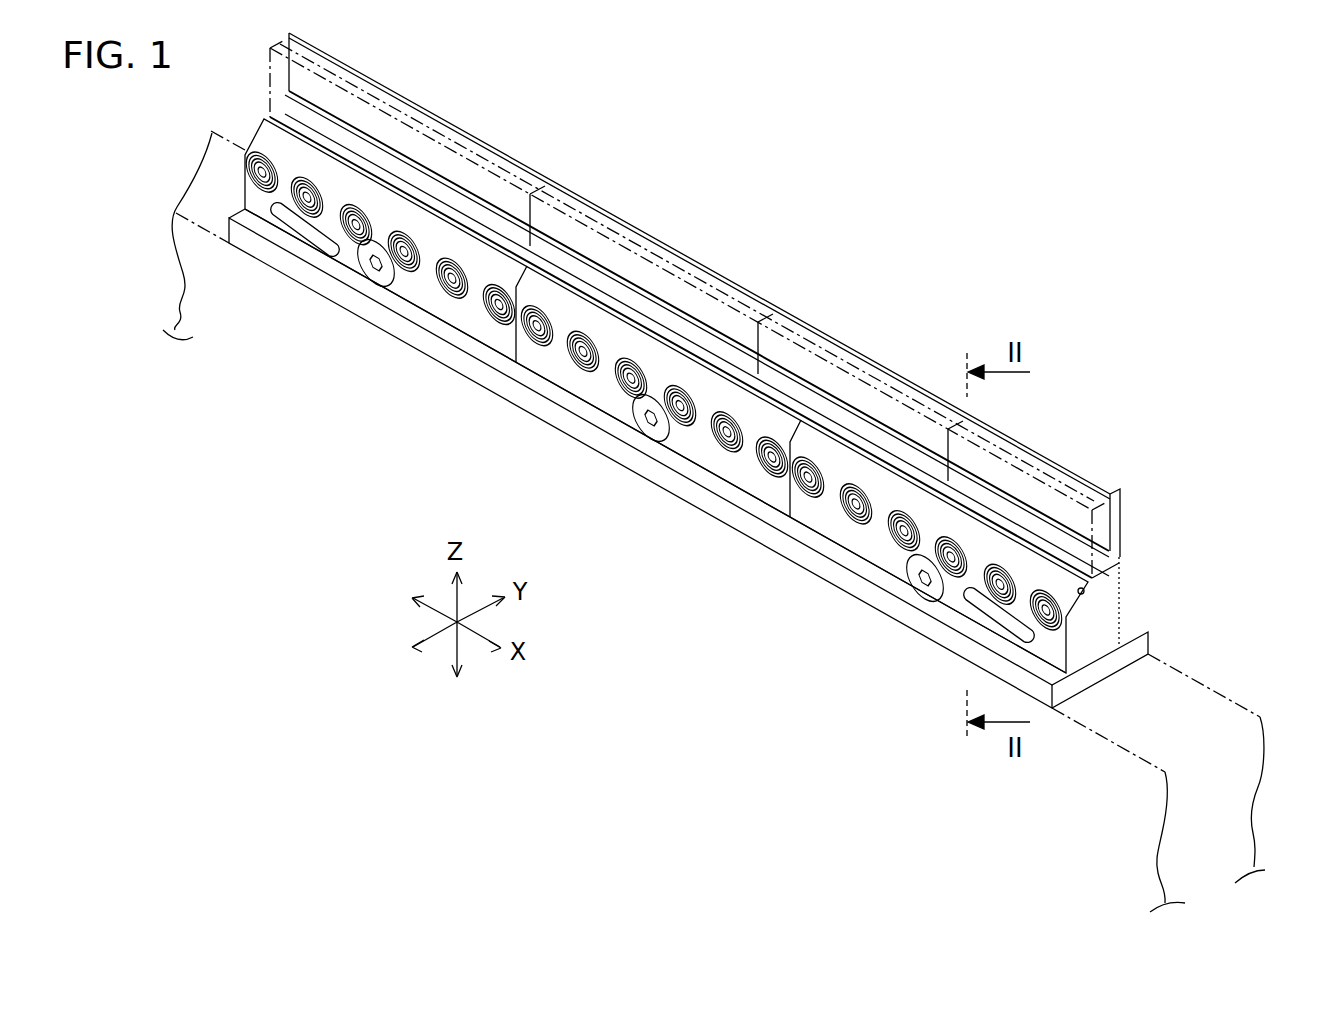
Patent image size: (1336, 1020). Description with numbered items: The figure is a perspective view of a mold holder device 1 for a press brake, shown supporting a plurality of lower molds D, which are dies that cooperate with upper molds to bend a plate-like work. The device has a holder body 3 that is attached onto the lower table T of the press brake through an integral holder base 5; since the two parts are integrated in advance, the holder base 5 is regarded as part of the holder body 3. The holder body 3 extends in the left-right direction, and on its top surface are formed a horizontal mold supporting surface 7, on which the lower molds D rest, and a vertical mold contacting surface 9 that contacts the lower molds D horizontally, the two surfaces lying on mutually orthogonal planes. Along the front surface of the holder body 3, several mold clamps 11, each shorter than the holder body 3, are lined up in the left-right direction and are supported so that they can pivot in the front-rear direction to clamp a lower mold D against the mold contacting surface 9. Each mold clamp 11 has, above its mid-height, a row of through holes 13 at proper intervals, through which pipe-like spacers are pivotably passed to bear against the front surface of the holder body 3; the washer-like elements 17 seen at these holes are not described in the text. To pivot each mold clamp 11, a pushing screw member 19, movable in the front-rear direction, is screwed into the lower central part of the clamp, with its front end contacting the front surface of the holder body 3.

The mold holder device 1 is at (1172, 468).
The holder body 3 is at (1108, 607).
The holder base 5 is at (1100, 670).
The mold supporting surface 7 is at (1098, 580).
The mold contacting surface 9 is at (1100, 560).
The mold clamp 11 is at (437, 305).
The through hole 13 is at (410, 233).
The washer 17 is at (350, 235).
The pushing screw member 19 is at (371, 278).
The lower mold D is at (578, 240).
The lower table T is at (1248, 780).